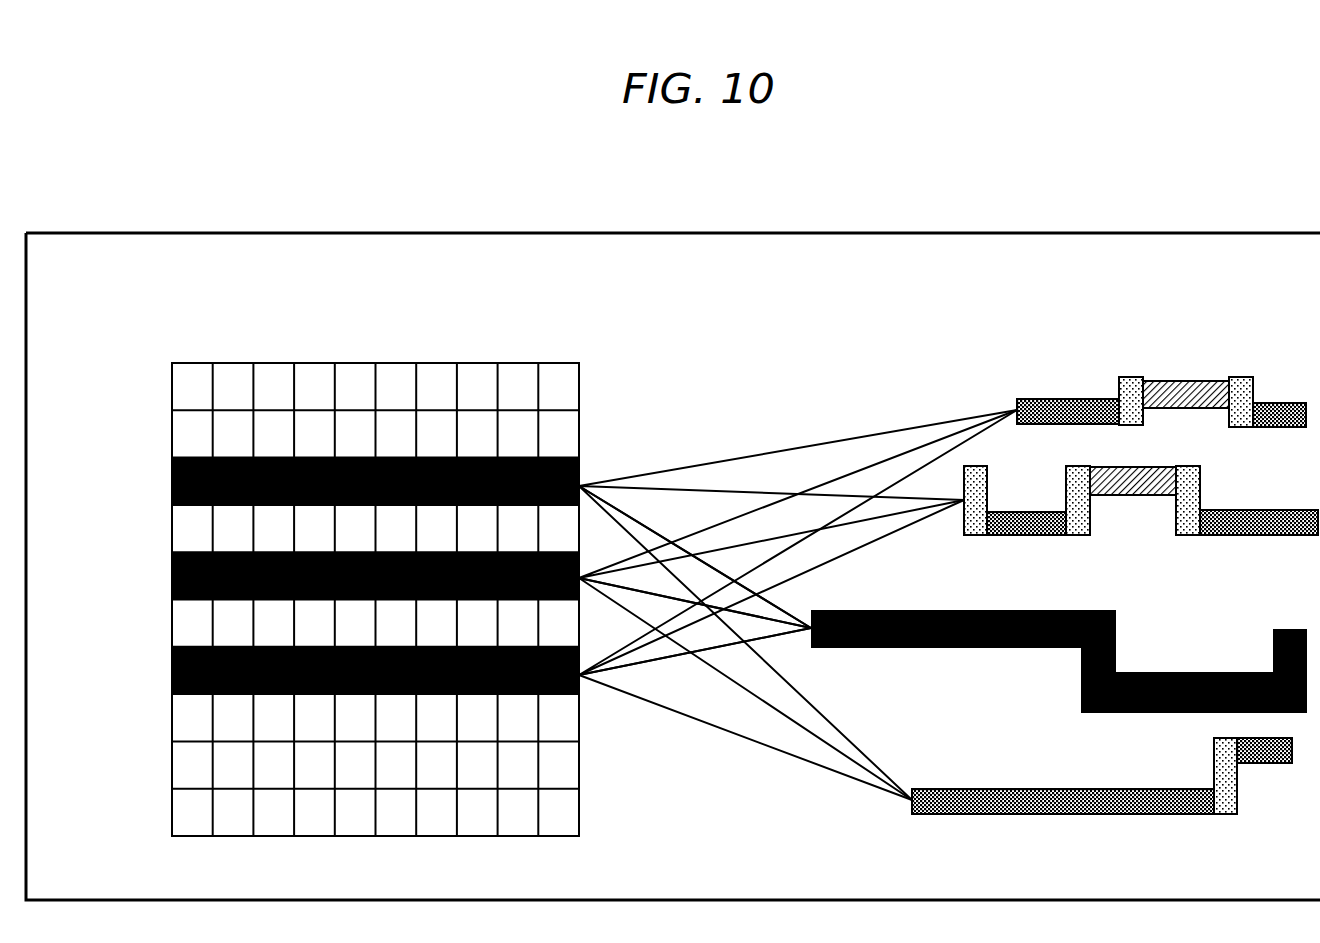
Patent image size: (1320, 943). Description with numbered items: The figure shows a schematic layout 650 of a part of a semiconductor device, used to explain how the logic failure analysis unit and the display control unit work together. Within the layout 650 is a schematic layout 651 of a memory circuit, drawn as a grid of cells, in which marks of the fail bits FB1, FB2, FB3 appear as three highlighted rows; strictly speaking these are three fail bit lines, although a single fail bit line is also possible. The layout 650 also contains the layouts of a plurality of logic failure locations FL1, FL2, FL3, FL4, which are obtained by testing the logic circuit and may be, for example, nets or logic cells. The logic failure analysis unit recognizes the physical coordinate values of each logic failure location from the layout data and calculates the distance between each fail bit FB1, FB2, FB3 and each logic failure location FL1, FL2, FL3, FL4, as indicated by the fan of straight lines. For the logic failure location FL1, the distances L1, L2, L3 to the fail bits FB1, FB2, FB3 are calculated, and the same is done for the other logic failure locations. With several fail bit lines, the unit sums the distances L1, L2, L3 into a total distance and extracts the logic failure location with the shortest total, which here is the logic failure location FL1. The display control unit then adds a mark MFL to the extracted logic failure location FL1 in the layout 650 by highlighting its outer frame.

The schematic layout of a part of the semiconductor device 650 is at (166, 231).
The schematic layout of a memory circuit 651 is at (322, 581).
The fail bit FB1 is at (172, 481).
The fail bit FB2 is at (172, 575).
The fail bit FB3 is at (172, 672).
The logic failure location FL1 is at (1059, 635).
The logic failure location FL2 is at (1102, 776).
The logic failure location FL3 is at (1141, 500).
The logic failure location FL4 is at (1161, 386).
The mark of the logic failure location MFL is at (1092, 606).
The distance L1 is at (778, 607).
The distance L2 is at (784, 623).
The distance L3 is at (667, 660).